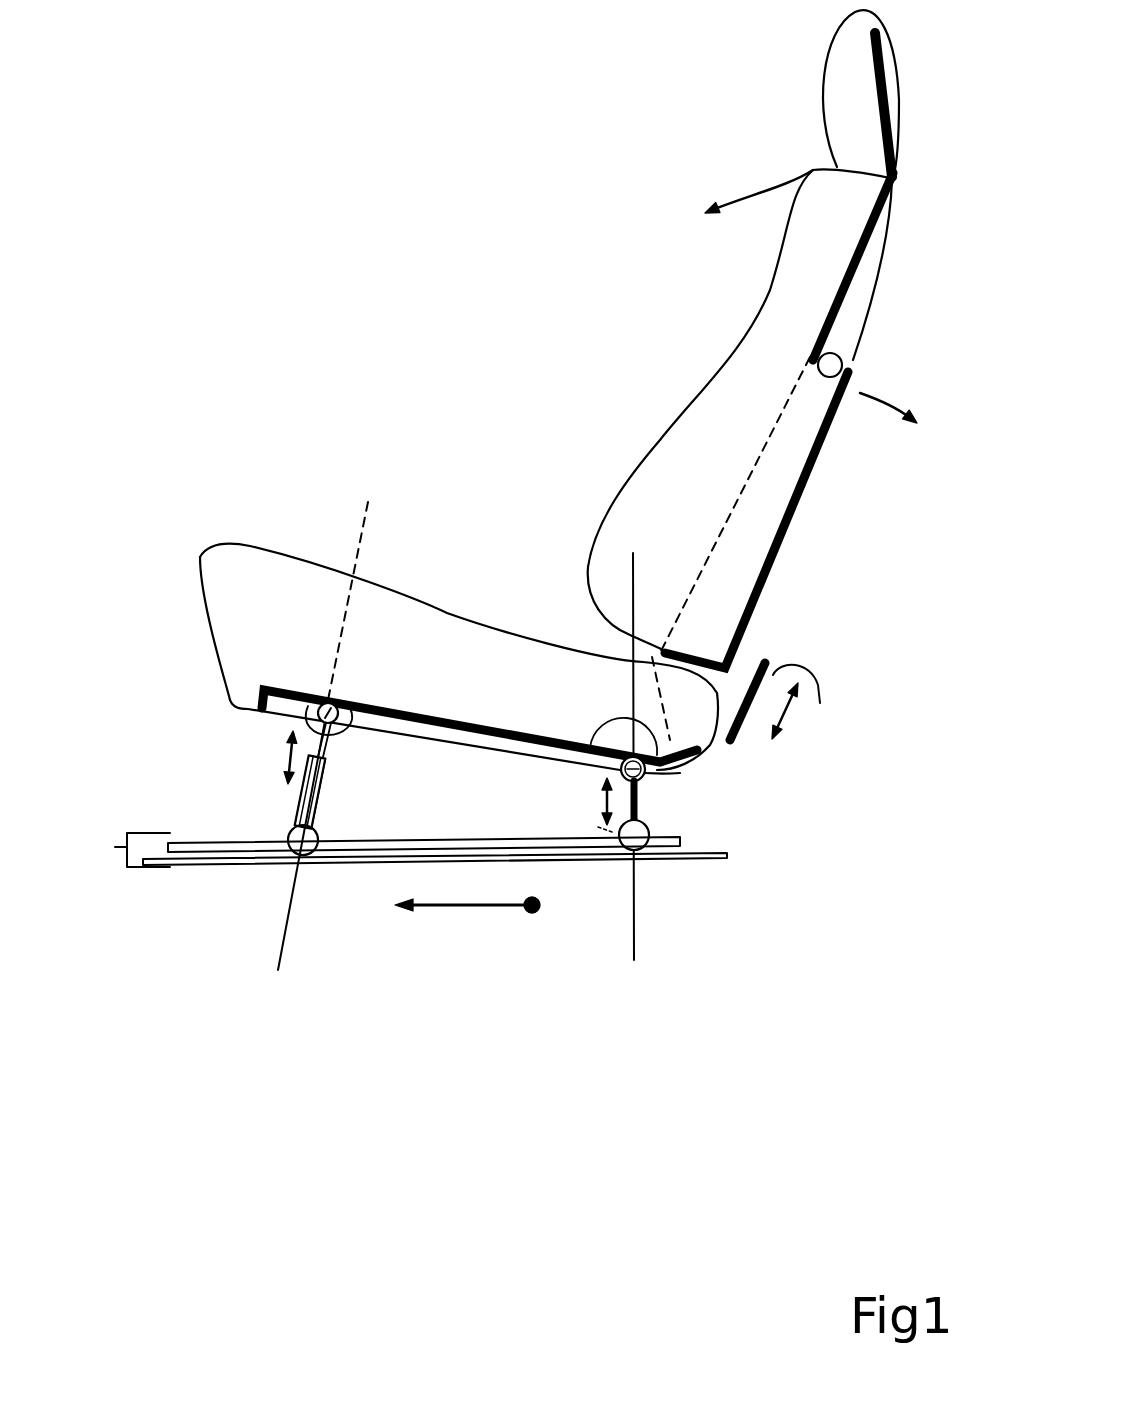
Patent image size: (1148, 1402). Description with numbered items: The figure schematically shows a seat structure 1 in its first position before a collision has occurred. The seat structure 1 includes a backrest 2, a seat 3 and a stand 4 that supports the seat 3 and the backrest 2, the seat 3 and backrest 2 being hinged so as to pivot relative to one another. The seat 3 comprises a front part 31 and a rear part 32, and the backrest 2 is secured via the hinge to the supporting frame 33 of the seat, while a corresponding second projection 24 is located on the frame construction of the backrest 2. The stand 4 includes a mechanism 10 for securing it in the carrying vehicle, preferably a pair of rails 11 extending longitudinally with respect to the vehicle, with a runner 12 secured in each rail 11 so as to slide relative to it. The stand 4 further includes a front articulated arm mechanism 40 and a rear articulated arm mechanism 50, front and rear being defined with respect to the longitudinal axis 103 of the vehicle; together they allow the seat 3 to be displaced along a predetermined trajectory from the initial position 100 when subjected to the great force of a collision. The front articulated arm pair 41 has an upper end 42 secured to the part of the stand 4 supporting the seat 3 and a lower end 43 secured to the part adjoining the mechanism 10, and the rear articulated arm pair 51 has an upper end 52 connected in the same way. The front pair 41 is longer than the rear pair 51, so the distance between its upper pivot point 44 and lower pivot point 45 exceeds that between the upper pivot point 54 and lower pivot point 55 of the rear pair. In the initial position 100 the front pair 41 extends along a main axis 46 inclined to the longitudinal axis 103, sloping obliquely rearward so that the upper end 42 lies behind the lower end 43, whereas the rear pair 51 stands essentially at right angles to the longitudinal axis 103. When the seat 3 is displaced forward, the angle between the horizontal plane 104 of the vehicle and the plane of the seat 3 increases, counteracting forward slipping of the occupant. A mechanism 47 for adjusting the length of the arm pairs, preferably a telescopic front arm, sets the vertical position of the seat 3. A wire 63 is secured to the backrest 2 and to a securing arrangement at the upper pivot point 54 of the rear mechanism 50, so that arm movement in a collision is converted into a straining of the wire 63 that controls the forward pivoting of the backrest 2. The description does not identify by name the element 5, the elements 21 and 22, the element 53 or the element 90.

The seat structure 1 is at (283, 406).
The backrest 2 is at (767, 300).
The seat 3 is at (496, 603).
The stand 4 is at (250, 755).
The rear fitting bar 5 is at (700, 742).
The means for affecting securement in a carrying vehicle 10 is at (444, 868).
The rail 11 is at (733, 856).
The runner 12 is at (682, 843).
The upper backrest frame part 21 is at (852, 282).
The lower backrest frame part 22 is at (800, 497).
The second projection 24 is at (663, 648).
The front part 31 is at (255, 563).
The rear part 32 is at (580, 750).
The supporting frame 33 is at (523, 743).
The front articulated arm mechanism 40 is at (371, 776).
The front articulated arm pair 41 is at (332, 762).
The upper end 42 is at (382, 735).
The upper pivot point 44 is at (347, 723).
The lower end 43 is at (361, 858).
The lower pivot point 45 is at (317, 850).
The main axis 46 is at (360, 582).
The means for adjusting the length of the articulated arm pairs 47 is at (298, 817).
The rear articulated arm mechanism 50 is at (700, 810).
The rear articulated arm pair 51 is at (640, 803).
The upper end 52 is at (648, 773).
The upper pivot point 54 is at (850, 352).
The rear lower pivot 53 is at (576, 856).
The lower pivot point 55 is at (603, 860).
The wire 63 is at (752, 434).
The adjustment direction arrow 90 is at (802, 702).
The first initial position 100 is at (287, 940).
The longitudinal axis 103 is at (456, 922).
The horizontal plane 104 is at (532, 921).